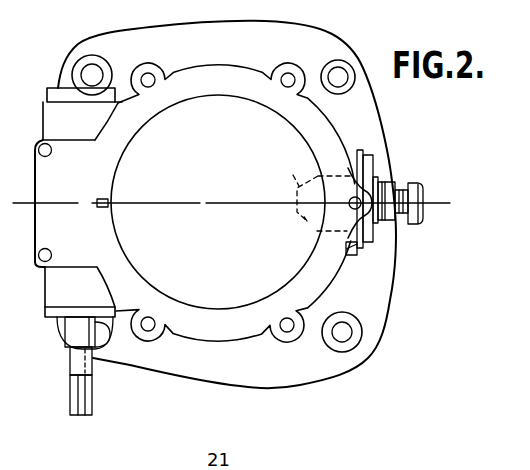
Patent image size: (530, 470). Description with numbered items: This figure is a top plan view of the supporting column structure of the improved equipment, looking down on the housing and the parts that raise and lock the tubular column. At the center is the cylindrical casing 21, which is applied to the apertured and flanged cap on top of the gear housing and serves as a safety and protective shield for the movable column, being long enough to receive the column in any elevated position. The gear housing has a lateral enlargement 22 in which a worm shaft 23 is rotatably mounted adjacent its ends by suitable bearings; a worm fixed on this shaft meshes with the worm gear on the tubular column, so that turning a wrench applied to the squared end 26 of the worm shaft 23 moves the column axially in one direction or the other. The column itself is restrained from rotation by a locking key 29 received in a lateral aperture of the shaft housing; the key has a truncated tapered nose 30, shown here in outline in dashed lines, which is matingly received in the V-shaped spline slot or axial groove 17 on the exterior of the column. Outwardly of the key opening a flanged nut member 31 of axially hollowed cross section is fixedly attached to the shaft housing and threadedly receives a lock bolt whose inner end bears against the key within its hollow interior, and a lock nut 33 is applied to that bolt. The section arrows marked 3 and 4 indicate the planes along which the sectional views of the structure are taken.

The cylindrical casing 21 is at (230, 115).
The lateral enlargement 22 is at (62, 283).
The worm shaft 23 is at (78, 353).
The squared end 26 is at (93, 398).
The axial groove 17 is at (303, 225).
The truncated tapered nose 30 is at (293, 175).
The locking key 29 is at (362, 256).
The flanged nut member 31 is at (375, 243).
The lock nut 33 is at (423, 183).
The section line 3- 3 is at (80, 33).
The section line 4- 4 is at (22, 198).